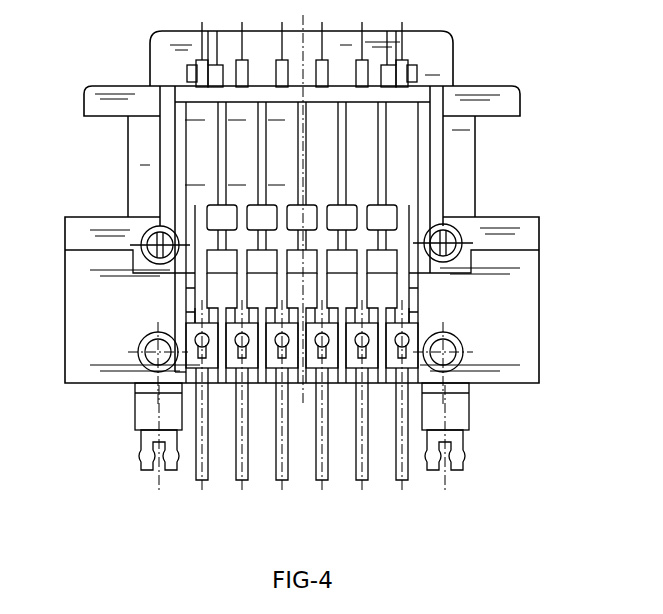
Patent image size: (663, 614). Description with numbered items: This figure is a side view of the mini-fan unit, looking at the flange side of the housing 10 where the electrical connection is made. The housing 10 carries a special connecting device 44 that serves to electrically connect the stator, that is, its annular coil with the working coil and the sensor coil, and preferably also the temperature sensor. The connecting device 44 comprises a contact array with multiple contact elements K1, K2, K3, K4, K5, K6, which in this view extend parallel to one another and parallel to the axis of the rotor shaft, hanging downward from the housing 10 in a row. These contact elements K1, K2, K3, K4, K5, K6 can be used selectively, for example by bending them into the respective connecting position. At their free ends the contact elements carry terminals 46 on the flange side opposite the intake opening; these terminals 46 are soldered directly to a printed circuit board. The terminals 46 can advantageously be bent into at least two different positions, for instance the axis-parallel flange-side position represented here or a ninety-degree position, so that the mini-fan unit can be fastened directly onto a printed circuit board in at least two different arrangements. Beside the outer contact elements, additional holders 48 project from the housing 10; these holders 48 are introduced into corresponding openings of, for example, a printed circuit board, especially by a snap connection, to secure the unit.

The housing 10 is at (460, 182).
The connecting device 44 is at (175, 491).
The terminals 46 is at (408, 477).
The holders 48 is at (137, 457).
The contact element K1 is at (204, 273).
The contact element K2 is at (242, 273).
The contact element K3 is at (282, 273).
The contact element K4 is at (322, 273).
The contact element K5 is at (362, 273).
The contact element K6 is at (439, 277).